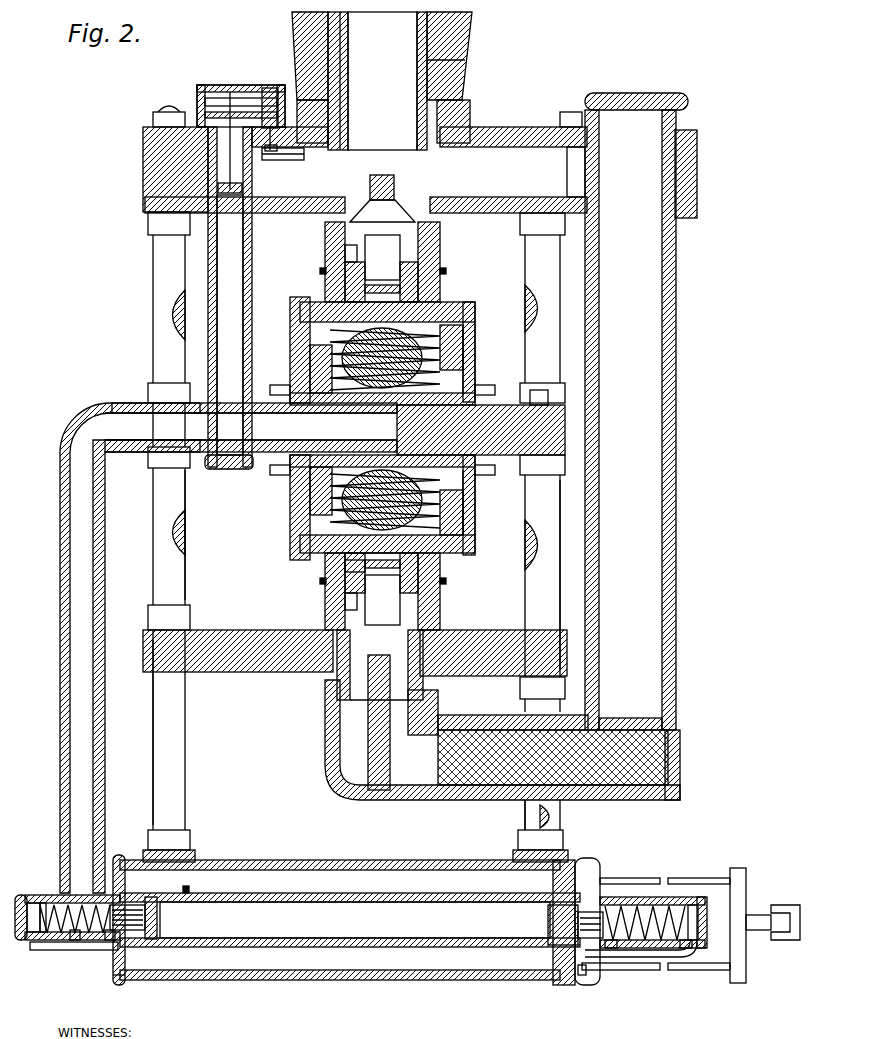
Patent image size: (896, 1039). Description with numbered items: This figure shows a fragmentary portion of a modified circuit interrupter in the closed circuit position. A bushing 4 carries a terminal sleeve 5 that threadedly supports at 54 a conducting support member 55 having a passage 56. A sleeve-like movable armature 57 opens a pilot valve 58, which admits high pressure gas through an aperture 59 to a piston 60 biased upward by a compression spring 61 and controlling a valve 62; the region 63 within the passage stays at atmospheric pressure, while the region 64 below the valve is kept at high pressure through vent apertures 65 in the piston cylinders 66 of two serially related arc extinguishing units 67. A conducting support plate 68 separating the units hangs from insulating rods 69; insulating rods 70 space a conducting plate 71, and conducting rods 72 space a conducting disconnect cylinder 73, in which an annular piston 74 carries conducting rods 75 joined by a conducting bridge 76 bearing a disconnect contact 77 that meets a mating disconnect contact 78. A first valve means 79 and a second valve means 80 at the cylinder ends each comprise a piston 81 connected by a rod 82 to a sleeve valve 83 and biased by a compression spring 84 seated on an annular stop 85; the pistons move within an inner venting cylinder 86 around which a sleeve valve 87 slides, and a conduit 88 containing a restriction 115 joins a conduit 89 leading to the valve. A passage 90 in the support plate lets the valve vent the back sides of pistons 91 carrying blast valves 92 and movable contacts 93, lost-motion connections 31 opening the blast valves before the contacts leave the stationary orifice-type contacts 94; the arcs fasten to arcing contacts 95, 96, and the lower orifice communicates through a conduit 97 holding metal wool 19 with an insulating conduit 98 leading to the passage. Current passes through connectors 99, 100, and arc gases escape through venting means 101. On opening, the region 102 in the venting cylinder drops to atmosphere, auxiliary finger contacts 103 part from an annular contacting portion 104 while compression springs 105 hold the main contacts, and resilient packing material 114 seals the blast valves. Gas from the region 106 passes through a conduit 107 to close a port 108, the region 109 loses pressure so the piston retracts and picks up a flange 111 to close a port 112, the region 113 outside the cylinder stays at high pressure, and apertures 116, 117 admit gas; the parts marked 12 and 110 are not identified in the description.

The bushing 4 is at (470, 32).
The terminal sleeve 5 is at (463, 60).
The valve chamber 12 is at (370, 997).
The metal wool 19 is at (625, 790).
The lost-motion connections 31 is at (350, 569).
The threaded connection 54 is at (460, 100).
The conducting support member 55 is at (480, 127).
The passage 56 is at (445, 197).
The movable armature 57 is at (417, 22).
The pilot valve 58 is at (268, 86).
The aperture 59 is at (280, 88).
The piston 60 is at (232, 85).
The compression spring 61 is at (196, 110).
The valve 62 is at (243, 195).
The region 63 is at (292, 168).
The region 64 is at (230, 325).
The vent apertures 65 is at (470, 375).
The piston cylinders 66 is at (475, 330).
The arc extinguishing units 67 is at (377, 411).
The conducting support plate 68 is at (542, 404).
The insulating rods 69 is at (150, 300).
The insulating rods 70 is at (187, 580).
The conducting plate 71 is at (468, 641).
The conducting rods 72 is at (187, 784).
The disconnect cylinder 73 is at (290, 862).
The annular piston 74 is at (560, 985).
The conducting rods 75 is at (622, 878).
The conducting bridge 76 is at (747, 876).
The disconnect contact 77 is at (780, 940).
The disconnect contact 78 is at (785, 905).
The first valve means 79 is at (67, 893).
The second valve means 80 is at (653, 915).
The piston 81 is at (42, 903).
The rod 82 is at (75, 941).
The sleeve valve 83 is at (137, 917).
The compression spring 84 is at (58, 940).
The annular stop 85 is at (112, 941).
The inner venting cylinder 86 is at (350, 887).
The sleeve valve 87 is at (270, 949).
The conduit 88 is at (105, 714).
The conduit 89 is at (252, 258).
The passage 90 is at (251, 427).
The pistons 91 is at (452, 302).
The blast valves 92 is at (438, 275).
The movable contacts 93 is at (400, 243).
The stationary orifice-type contacts 94 is at (380, 450).
The arcing contact 95 is at (395, 190).
The arcing contact 96 is at (369, 722).
The conduit 97 is at (455, 800).
The insulating conduit 98 is at (676, 361).
The connector 99 is at (382, 417).
The connector 100 is at (398, 429).
The venting means 101 is at (372, 81).
The region 102 is at (355, 920).
The auxiliary finger contacts 103 is at (440, 250).
The annular contacting portion 104 is at (438, 265).
The compression springs 105 is at (402, 426).
The region 106 is at (582, 985).
The conduit 107 is at (36, 951).
The port 108 is at (548, 930).
The region 109 is at (520, 961).
The cap 110 is at (28, 897).
The flange 111 is at (189, 889).
The port 112 is at (158, 925).
The region 113 is at (490, 997).
The resilient packing material 114 is at (323, 270).
The restriction 115 is at (121, 860).
The aperture 116 is at (136, 982).
The vent 117 is at (582, 976).